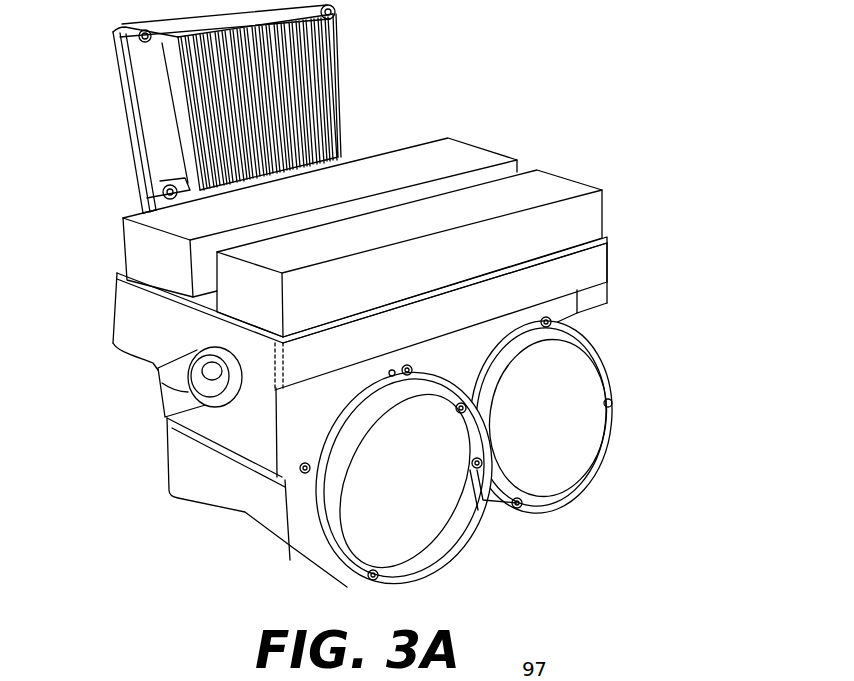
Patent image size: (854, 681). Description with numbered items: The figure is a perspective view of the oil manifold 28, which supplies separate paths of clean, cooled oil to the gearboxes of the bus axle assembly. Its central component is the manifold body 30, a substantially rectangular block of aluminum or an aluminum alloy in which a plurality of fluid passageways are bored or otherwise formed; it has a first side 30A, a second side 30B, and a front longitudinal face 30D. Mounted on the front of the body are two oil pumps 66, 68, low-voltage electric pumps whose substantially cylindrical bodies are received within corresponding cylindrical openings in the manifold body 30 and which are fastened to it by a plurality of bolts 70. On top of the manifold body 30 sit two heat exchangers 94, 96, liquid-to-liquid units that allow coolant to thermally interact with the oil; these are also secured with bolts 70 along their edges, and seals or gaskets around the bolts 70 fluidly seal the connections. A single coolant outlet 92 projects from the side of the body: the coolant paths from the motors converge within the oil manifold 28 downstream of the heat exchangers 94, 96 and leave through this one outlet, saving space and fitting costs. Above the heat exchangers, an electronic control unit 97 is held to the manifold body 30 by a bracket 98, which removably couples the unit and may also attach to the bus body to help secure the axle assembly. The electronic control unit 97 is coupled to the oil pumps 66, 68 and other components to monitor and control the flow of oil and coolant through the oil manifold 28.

The oil manifold 28 is at (652, 70).
The manifold body 30 is at (257, 515).
The first side 30A is at (643, 356).
The second side 30B is at (160, 446).
The front longitudinal face 30D is at (643, 471).
The oil pump 66 is at (443, 560).
The oil pump 68 is at (585, 486).
The bolts 70 is at (413, 365).
The coolant outlet 92 is at (205, 372).
The heat exchanger 94 is at (567, 173).
The heat exchanger 96 is at (480, 152).
The electronic control unit 97 is at (362, 97).
The bracket 98 is at (125, 168).